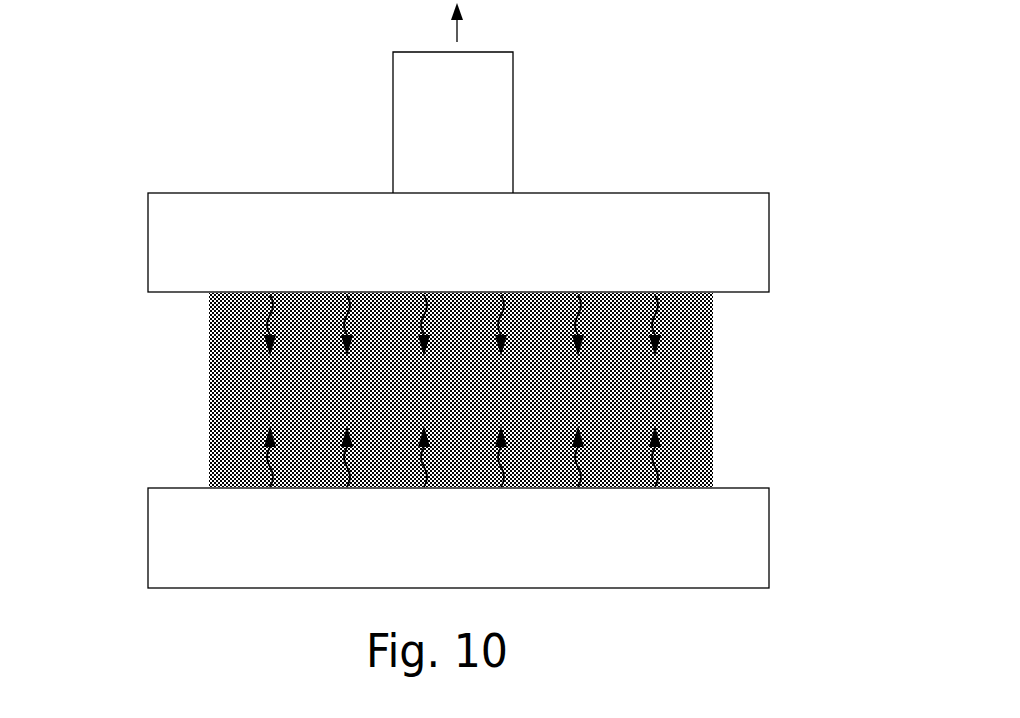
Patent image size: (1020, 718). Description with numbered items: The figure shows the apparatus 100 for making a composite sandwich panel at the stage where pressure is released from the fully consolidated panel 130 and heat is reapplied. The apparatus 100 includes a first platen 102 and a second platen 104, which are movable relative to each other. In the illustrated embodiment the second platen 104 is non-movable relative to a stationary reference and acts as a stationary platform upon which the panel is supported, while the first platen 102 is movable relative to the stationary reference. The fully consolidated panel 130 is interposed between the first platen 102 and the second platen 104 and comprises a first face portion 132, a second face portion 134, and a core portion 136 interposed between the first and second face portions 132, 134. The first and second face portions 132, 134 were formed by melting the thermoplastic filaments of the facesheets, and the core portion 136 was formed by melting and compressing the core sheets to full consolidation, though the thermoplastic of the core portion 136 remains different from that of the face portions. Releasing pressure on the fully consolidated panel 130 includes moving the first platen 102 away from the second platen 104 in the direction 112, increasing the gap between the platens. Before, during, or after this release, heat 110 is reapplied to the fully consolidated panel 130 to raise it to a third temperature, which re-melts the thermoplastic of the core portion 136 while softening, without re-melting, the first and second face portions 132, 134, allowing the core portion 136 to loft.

The apparatus 100 is at (754, 54).
The first platen 102 is at (175, 230).
The second platen 104 is at (168, 554).
The heat 110 is at (694, 311).
The direction 112 is at (459, 32).
The fully consolidated panel 130 is at (361, 375).
The first face portion 132 is at (198, 309).
The second face portion 134 is at (198, 473).
The core portion 136 is at (198, 380).